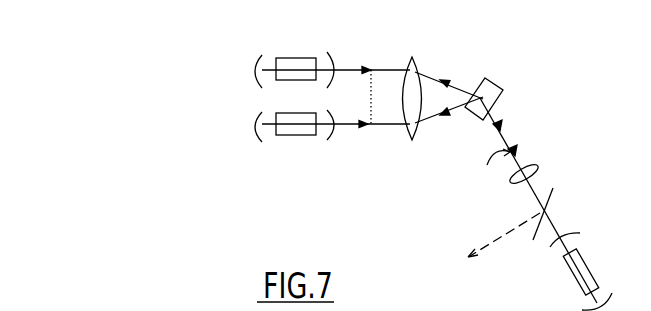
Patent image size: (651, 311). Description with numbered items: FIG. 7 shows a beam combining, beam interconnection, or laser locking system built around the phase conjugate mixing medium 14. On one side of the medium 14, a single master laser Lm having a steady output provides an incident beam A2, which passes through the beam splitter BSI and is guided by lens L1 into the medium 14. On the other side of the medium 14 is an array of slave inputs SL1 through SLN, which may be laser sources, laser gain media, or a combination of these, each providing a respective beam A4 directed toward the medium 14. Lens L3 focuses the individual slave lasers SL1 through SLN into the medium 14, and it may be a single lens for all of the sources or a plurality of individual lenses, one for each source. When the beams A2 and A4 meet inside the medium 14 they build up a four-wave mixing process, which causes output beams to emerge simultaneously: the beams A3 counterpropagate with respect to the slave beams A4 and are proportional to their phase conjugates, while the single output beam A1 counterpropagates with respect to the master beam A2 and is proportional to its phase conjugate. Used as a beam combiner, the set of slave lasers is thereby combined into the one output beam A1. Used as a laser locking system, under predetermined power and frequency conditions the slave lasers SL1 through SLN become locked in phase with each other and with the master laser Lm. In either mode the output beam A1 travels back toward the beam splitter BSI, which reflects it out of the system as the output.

The medium 14 is at (503, 90).
The first slave laser SL1 is at (276, 70).
The n-th slave laser SLN is at (273, 127).
The lens L3 is at (413, 57).
The lens L1 is at (538, 167).
The master laser Lm is at (587, 271).
The beam splitter BSI is at (561, 210).
The output beam A1 is at (500, 131).
The incident beam A2 is at (491, 170).
The counterpropagating beams A3 is at (441, 82).
The slave laser beams A4 is at (336, 104).